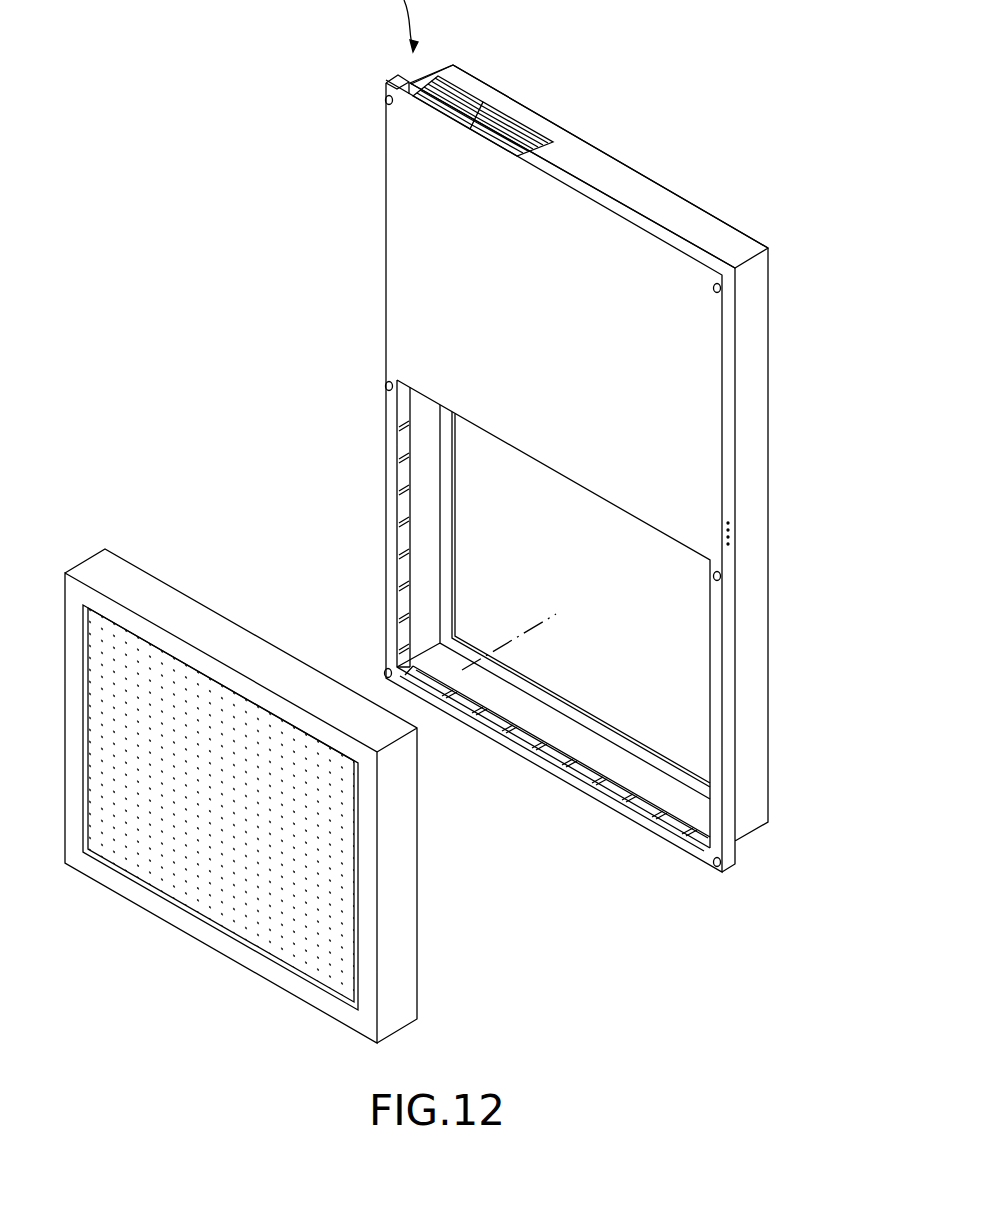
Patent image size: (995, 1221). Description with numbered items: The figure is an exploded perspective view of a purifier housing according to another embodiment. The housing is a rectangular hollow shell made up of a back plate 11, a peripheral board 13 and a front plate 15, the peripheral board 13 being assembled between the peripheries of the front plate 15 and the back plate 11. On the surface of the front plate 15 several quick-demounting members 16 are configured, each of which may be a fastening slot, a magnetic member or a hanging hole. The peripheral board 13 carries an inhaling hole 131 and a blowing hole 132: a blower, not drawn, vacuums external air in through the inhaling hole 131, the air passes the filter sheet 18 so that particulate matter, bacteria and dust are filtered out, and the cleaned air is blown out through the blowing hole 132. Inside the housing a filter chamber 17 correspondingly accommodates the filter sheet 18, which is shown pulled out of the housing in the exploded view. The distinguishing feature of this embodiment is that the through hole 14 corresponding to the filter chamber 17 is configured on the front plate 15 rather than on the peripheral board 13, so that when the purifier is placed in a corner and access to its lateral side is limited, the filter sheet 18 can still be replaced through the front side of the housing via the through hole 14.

The back plate 11 is at (772, 284).
The peripheral board 13 is at (626, 188).
The blowing hole 132 is at (508, 126).
The through hole 14 is at (688, 652).
The front plate 15 is at (416, 235).
The quick-demounting member 16 is at (385, 101).
The filter chamber 17 is at (478, 560).
The inhaling hole 131 is at (406, 478).
The filter sheet 18 is at (183, 690).